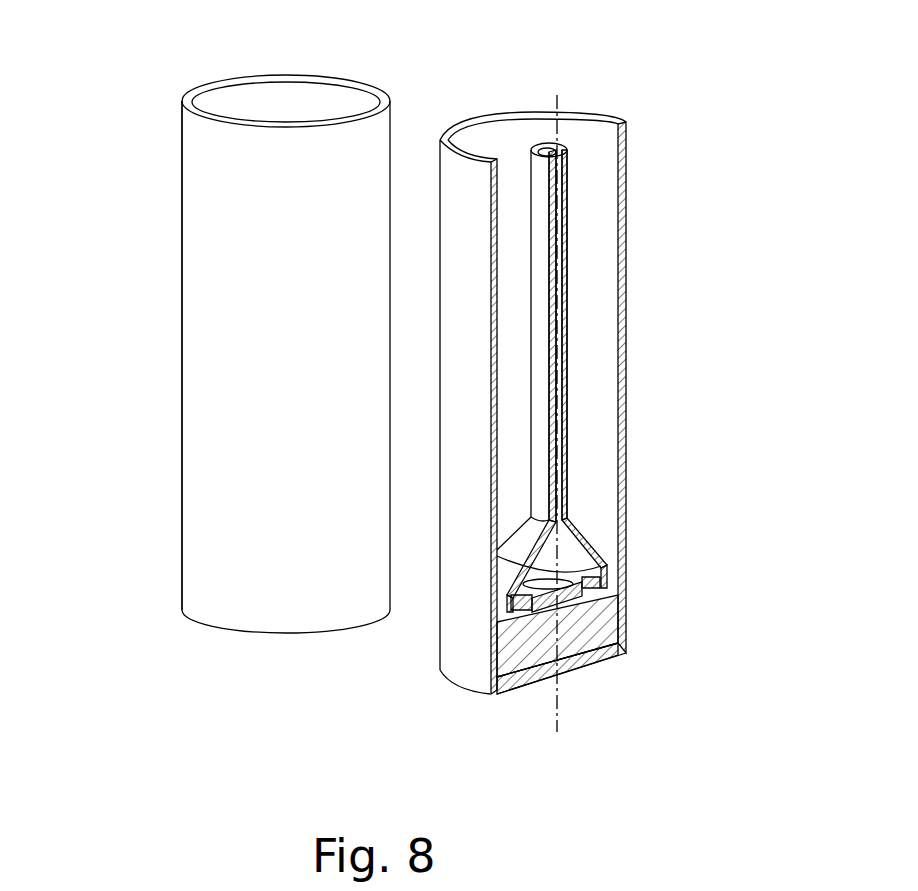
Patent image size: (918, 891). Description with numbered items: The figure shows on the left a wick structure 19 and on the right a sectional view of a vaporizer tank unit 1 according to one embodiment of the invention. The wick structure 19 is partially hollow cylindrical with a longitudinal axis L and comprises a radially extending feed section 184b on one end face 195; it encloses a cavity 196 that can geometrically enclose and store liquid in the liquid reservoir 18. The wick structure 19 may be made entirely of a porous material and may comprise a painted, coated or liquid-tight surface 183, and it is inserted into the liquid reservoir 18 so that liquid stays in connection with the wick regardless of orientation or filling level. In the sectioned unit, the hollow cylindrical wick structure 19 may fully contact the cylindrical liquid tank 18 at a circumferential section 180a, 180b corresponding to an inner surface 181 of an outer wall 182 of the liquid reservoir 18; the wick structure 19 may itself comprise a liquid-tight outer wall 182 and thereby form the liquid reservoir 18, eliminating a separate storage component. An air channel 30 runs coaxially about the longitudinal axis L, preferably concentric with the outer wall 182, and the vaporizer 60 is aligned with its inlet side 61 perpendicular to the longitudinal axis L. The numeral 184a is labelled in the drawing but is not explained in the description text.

The vaporizer tank unit 1 is at (452, 700).
The liquid reservoir 18 is at (443, 178).
The wick structure 19 is at (193, 130).
The air channel 30 is at (567, 355).
The vaporizer 60 is at (605, 592).
The inlet side 61 is at (562, 620).
The circumferential section 180a is at (628, 630).
The circumferential section 180b is at (463, 620).
The inner surface 181 is at (509, 269).
The outer wall 182 is at (460, 587).
The surface 183 is at (245, 212).
The side wall inner surface 184a is at (612, 182).
The feed section 184b is at (598, 655).
The end face 195 is at (218, 647).
The cavity 196 is at (290, 94).
The longitudinal axis L is at (558, 425).